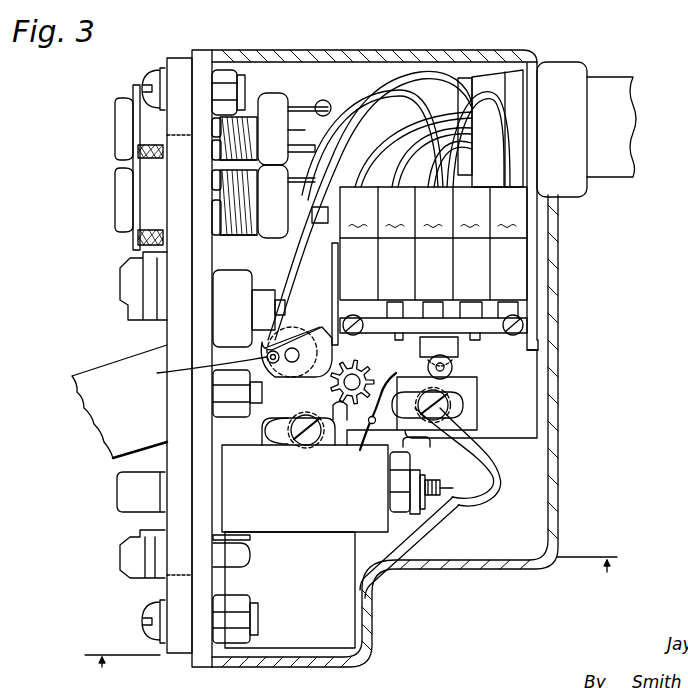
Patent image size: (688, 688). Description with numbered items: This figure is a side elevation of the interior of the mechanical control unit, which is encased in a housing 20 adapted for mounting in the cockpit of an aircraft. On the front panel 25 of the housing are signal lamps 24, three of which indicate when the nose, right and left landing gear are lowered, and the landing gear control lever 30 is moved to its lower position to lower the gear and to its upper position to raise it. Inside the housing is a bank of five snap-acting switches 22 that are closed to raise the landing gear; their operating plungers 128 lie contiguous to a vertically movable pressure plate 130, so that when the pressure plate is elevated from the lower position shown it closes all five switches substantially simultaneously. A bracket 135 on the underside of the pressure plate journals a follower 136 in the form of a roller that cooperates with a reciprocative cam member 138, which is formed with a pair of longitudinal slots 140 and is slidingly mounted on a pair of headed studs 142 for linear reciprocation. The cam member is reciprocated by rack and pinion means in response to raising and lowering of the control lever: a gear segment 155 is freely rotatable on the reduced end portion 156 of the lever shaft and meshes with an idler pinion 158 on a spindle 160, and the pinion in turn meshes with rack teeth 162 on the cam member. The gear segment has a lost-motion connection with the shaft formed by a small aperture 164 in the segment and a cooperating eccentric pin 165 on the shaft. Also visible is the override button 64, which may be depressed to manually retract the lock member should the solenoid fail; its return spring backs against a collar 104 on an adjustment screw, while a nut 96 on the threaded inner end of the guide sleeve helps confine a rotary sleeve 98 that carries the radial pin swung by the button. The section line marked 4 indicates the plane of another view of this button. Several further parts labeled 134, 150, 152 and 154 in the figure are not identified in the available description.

The section line 4- 4 is at (346, 609).
The housing 20 is at (428, 48).
The switches 22 is at (433, 243).
The signal lamps 24 is at (115, 132).
The front panel 25 is at (178, 328).
The landing gear control lever 30 is at (88, 370).
The override button 64 is at (135, 487).
The nut 96 is at (398, 515).
The sleeve 98 is at (322, 518).
The collar 104 is at (453, 500).
The operating plungers 128 is at (384, 318).
The pressure plate 130 is at (410, 318).
The bracket 134 is at (533, 280).
The bracket 135 is at (460, 345).
The follower 136 is at (450, 372).
The cam member 138 is at (472, 413).
The longitudinal slots 140 is at (273, 432).
The headed studs 142 is at (283, 433).
The frame 150 is at (466, 377).
The pawl arm 152 is at (383, 397).
The slot 154 is at (432, 418).
The gear segment 155 is at (312, 338).
The reduced end portion of the shaft 156 is at (294, 363).
The idler pinion 158 is at (352, 358).
The spindle 160 is at (372, 372).
The rack teeth 162 is at (330, 440).
The small aperture 164 is at (194, 368).
The eccentric pin 165 is at (270, 364).